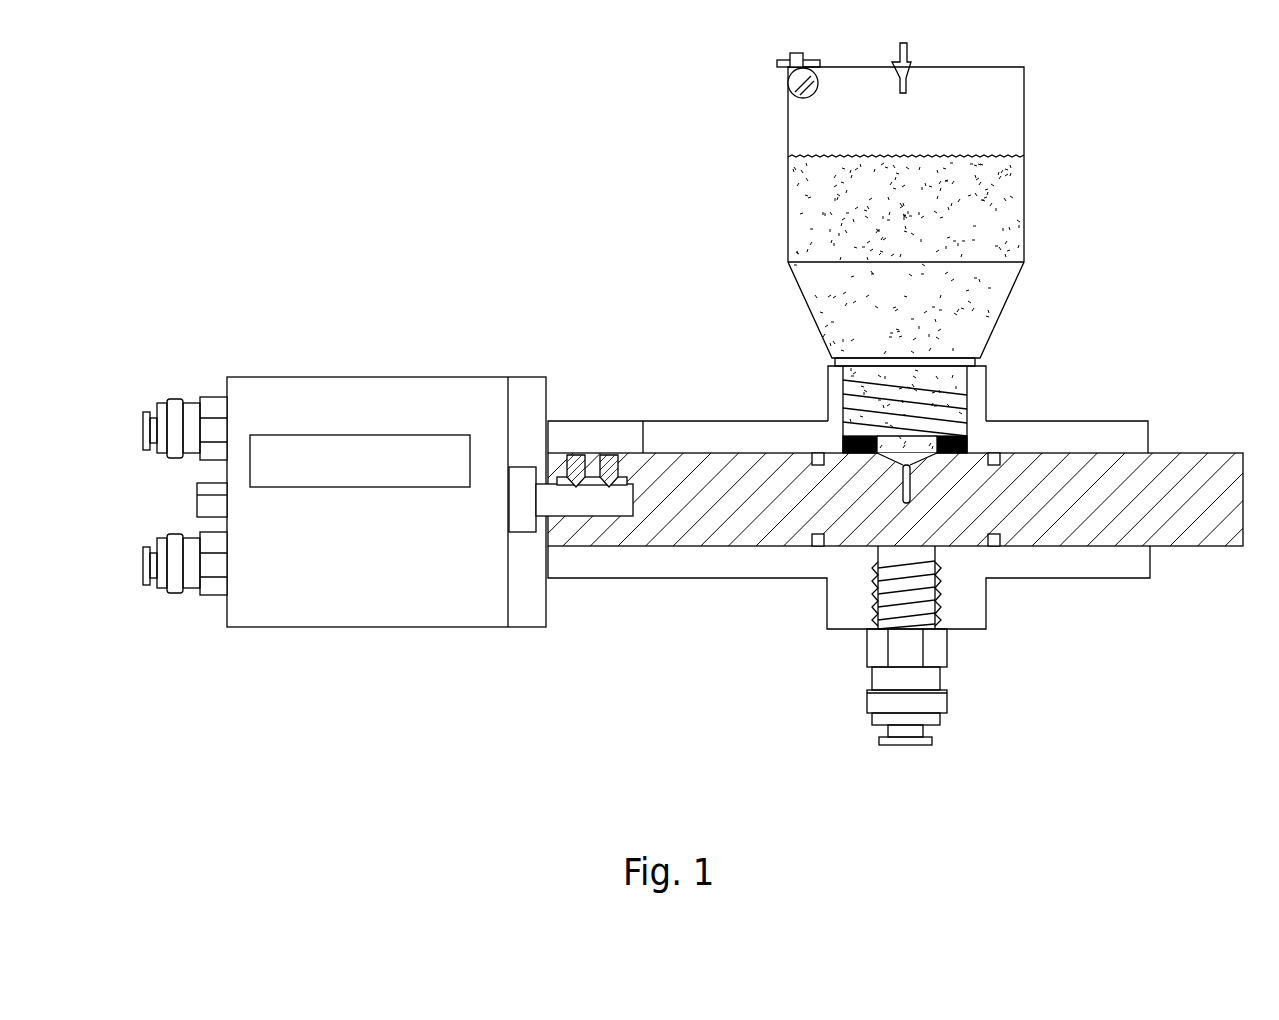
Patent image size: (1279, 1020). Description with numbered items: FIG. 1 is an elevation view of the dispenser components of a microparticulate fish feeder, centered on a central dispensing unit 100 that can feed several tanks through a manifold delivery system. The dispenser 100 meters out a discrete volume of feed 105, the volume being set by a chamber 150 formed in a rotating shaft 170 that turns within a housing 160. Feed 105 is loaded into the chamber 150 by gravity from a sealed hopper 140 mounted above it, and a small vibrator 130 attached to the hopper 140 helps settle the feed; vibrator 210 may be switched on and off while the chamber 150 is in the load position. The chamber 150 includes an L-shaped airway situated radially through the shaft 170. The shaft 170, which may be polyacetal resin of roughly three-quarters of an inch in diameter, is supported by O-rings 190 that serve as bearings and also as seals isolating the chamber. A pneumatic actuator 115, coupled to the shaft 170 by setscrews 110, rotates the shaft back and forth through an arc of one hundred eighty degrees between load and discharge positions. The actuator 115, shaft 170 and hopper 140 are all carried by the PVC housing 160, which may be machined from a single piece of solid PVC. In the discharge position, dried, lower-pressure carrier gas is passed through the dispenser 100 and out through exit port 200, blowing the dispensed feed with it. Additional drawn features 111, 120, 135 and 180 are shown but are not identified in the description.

The central dispensing unit 100 is at (1200, 709).
The feed 105 is at (965, 212).
The setscrews 110 is at (610, 453).
The pneumatic fittings 111 is at (152, 550).
The pneumatic actuator 115 is at (372, 607).
The seals 120 is at (848, 438).
The small vibrator 130 is at (790, 84).
The inlet port 135 is at (912, 66).
The sealed hopper 140 is at (992, 318).
The chamber 150 is at (912, 478).
The housing 160 is at (1100, 436).
The rotating shaft 170 is at (775, 525).
The fitting 180 is at (868, 673).
The O-rings 190 is at (816, 455).
The exit port 200 is at (928, 742).
The vibrator 210 is at (792, 55).